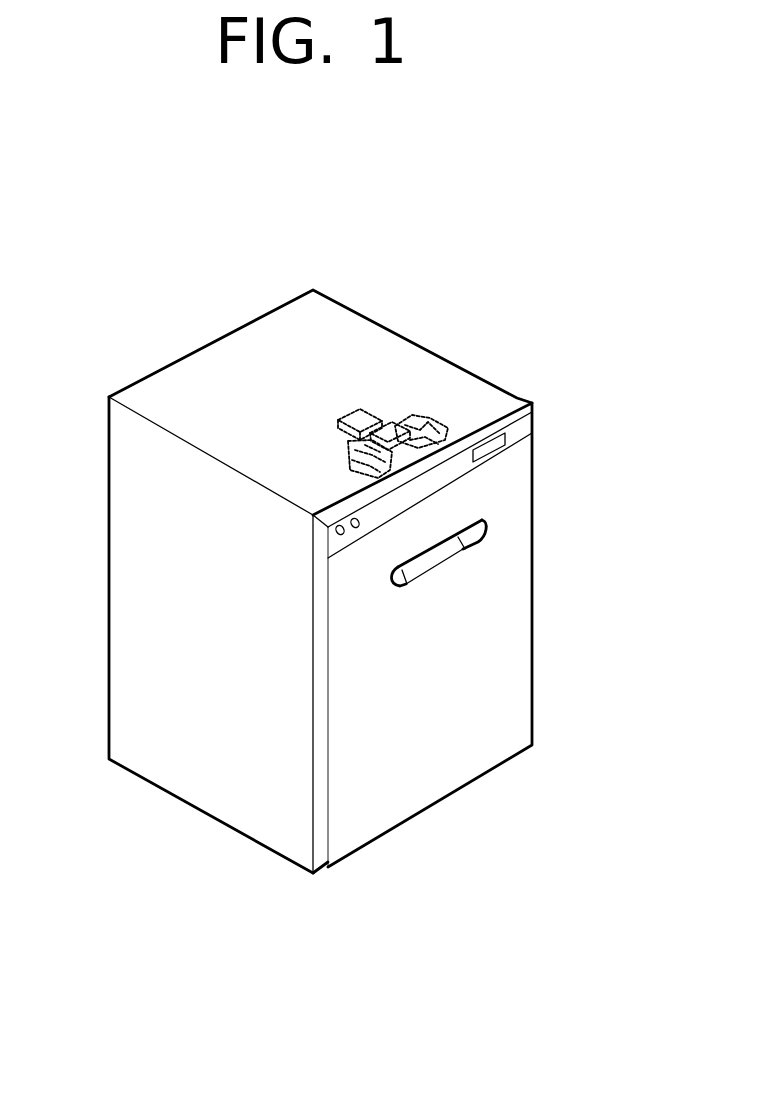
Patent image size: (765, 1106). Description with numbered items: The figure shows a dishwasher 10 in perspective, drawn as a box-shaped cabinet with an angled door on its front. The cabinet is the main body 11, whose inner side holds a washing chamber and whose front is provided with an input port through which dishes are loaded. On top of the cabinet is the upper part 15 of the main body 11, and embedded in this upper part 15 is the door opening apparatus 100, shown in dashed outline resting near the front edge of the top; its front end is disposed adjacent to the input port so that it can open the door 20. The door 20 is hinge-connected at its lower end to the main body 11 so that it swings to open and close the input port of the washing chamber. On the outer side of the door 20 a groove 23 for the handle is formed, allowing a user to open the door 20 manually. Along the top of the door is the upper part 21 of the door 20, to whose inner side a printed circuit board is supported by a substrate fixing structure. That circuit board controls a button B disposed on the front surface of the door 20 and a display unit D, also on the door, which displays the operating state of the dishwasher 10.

The dishwasher 10 is at (199, 256).
The main body 11 is at (128, 582).
The upper part of the main body 15 is at (358, 327).
The door opening apparatus 100 is at (425, 394).
The door 20 is at (547, 652).
The upper part of the door 21 is at (520, 422).
The groove for handle 23 is at (445, 553).
The display unit D is at (520, 432).
The button B is at (353, 518).